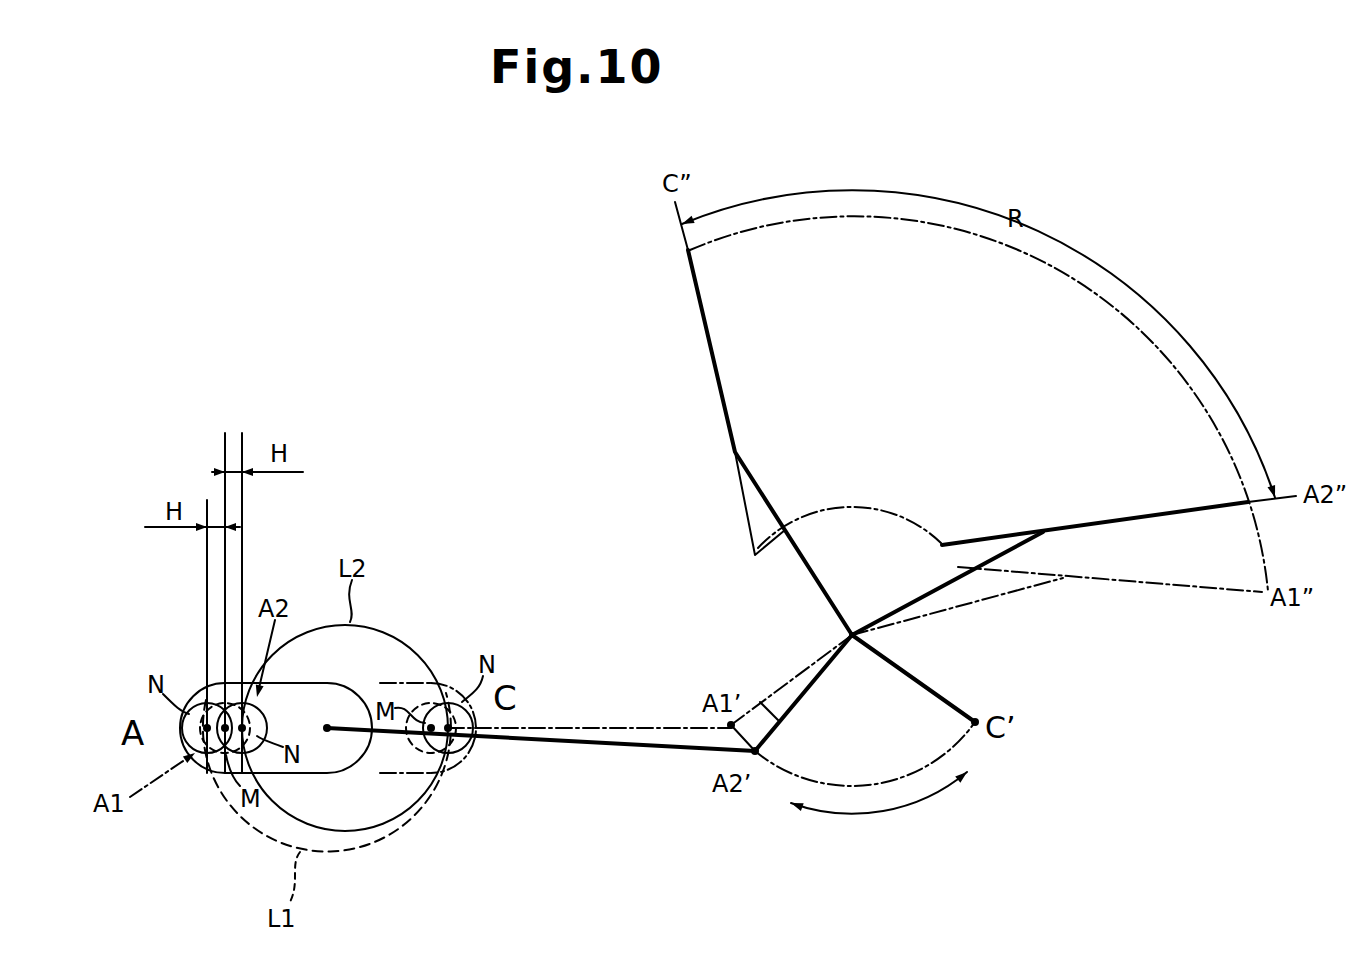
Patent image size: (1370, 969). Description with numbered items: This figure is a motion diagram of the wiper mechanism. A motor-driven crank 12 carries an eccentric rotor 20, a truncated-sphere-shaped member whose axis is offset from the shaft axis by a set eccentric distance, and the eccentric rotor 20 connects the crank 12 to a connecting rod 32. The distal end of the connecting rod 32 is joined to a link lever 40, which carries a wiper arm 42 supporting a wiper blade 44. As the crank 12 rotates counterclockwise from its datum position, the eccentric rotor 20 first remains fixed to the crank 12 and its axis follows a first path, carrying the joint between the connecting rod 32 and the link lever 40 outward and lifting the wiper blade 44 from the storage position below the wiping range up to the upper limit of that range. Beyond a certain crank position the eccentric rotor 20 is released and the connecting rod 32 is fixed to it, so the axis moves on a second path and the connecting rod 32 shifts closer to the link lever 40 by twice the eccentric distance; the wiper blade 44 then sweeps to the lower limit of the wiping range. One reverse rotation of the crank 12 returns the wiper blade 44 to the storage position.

The crank 12 is at (300, 684).
The eccentric rotor 20 is at (203, 765).
The connecting rod 32 is at (602, 722).
The link lever 40 is at (782, 727).
The wiper arm 42 is at (930, 597).
The wiper blade 44 is at (1178, 650).